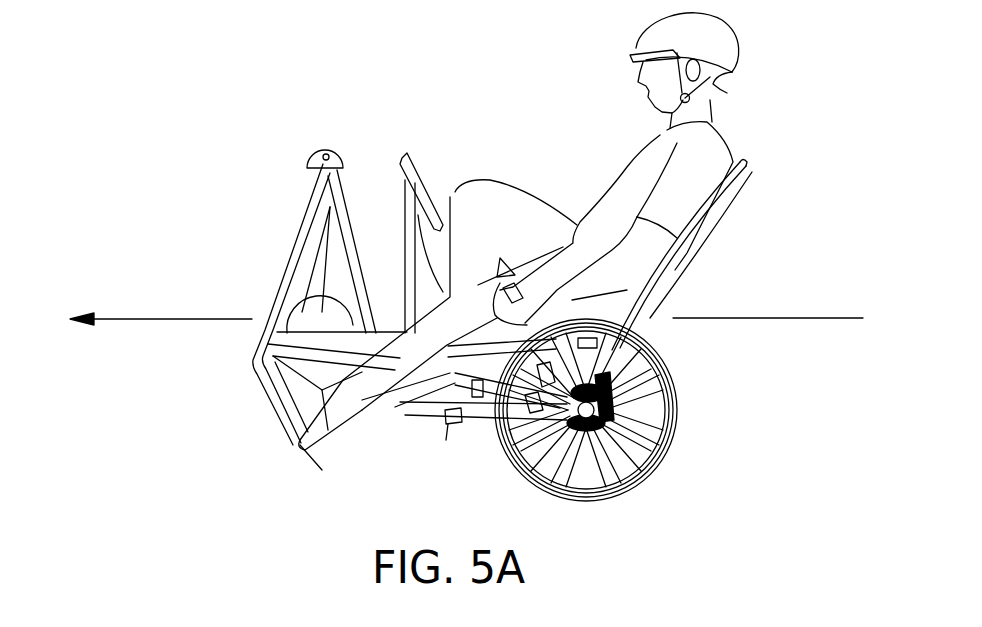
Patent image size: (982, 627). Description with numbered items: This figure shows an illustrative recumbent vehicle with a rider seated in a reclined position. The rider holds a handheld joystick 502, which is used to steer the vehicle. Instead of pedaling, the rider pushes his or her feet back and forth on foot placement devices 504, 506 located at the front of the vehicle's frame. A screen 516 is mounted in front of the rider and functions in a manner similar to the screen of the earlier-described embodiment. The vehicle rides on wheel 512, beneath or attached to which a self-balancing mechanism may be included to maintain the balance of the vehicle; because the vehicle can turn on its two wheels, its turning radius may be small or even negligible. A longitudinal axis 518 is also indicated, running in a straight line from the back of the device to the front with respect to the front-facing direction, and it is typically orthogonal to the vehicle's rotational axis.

The handheld joystick 502 is at (516, 283).
The foot placement device 504 is at (295, 445).
The foot placement device 506 is at (450, 424).
The wheel 512 is at (658, 472).
The screen 516 is at (410, 152).
The longitudinal axis 518 is at (803, 318).